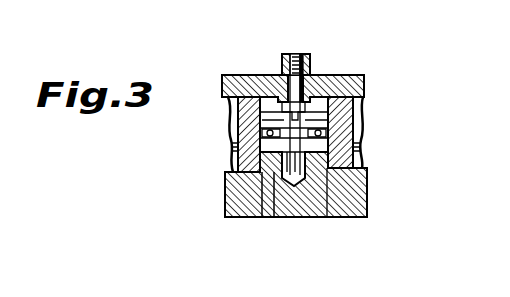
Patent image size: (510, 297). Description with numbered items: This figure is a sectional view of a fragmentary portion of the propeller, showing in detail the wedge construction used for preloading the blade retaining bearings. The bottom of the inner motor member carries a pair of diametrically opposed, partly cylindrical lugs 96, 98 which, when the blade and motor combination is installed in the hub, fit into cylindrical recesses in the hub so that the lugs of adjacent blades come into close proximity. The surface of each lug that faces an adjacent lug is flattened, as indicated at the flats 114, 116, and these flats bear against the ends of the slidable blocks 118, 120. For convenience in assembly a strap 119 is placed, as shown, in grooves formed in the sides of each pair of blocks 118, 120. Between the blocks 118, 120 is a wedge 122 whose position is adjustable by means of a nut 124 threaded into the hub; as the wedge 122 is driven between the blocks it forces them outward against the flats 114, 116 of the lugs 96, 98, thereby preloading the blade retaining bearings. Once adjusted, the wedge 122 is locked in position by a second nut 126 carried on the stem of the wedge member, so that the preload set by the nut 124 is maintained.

The lug 96 is at (230, 112).
The lug 98 is at (366, 106).
The flat 114 is at (232, 134).
The flat 116 is at (366, 132).
The slidable block 118 is at (263, 218).
The strap 119 is at (278, 217).
The slidable block 120 is at (335, 217).
The wedge 122 is at (316, 100).
The nut 124 is at (276, 76).
The nut 126 is at (306, 58).